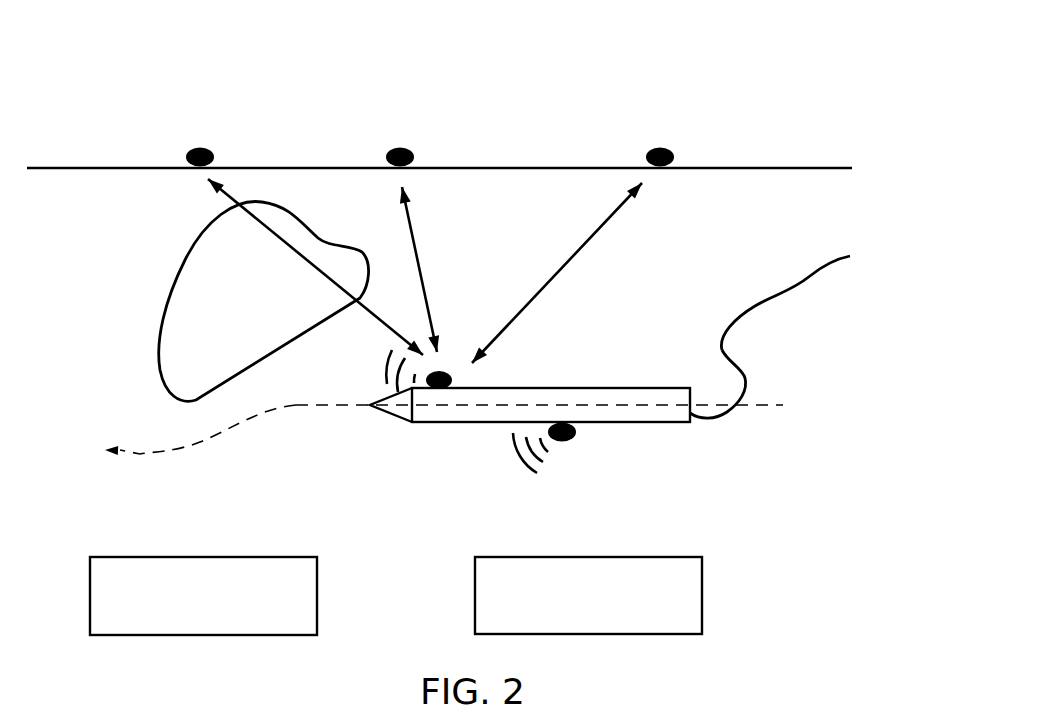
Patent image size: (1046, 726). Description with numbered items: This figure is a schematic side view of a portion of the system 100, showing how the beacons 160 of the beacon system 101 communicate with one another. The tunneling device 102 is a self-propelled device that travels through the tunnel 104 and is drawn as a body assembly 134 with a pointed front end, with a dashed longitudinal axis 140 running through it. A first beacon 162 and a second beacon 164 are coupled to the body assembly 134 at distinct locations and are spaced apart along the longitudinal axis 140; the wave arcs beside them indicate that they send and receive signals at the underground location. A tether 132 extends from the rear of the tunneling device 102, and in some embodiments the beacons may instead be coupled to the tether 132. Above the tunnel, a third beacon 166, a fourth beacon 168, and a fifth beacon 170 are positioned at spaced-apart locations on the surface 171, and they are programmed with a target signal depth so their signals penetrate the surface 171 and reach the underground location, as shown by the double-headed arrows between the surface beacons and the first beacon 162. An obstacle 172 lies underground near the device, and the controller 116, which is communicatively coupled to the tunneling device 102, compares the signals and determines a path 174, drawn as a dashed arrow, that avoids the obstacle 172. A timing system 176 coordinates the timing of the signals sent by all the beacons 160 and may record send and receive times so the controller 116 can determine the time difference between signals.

The system 100 is at (555, 48).
The beacon system 101 is at (192, 142).
The tunneling device 102 is at (516, 398).
The tunnel 104 is at (712, 388).
The controller 116 is at (702, 592).
The tether 132 is at (794, 337).
The body assembly 134 is at (600, 387).
The longitudinal axis 140 is at (772, 406).
The beacons 160 is at (171, 126).
The first beacon 162 is at (452, 372).
The second beacon 164 is at (562, 442).
The third beacon 166 is at (206, 147).
The fourth beacon 168 is at (400, 147).
The fifth beacon 170 is at (660, 147).
The surface 171 is at (818, 166).
The obstacle 172 is at (172, 283).
The path 174 is at (140, 455).
The timing system 176 is at (317, 592).